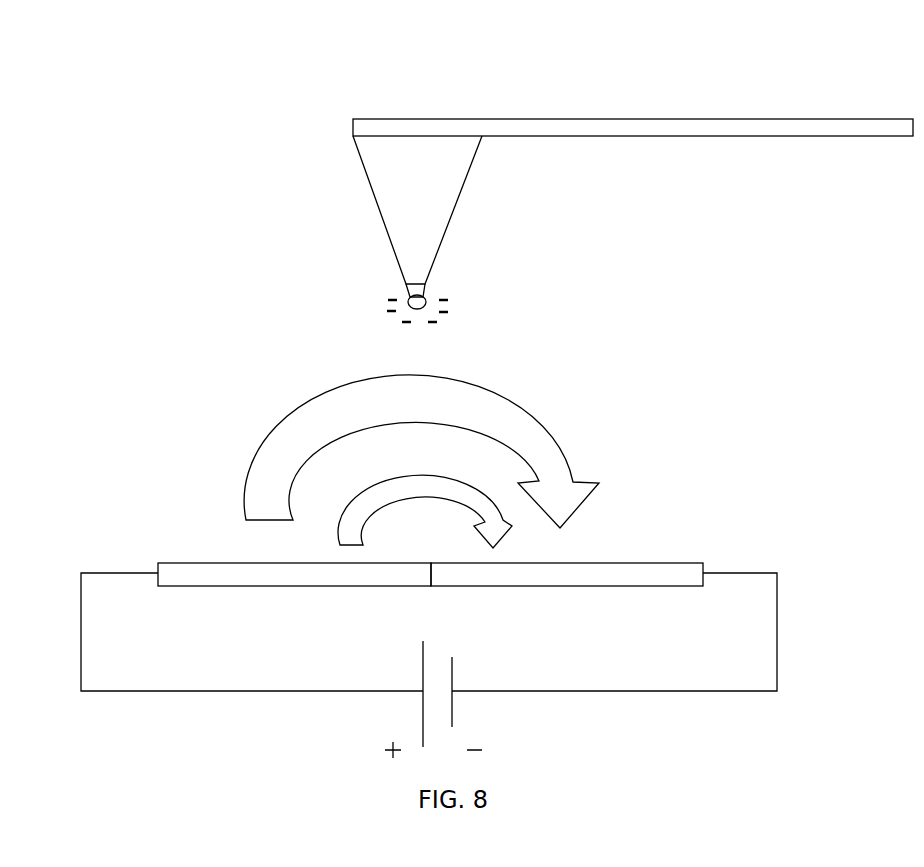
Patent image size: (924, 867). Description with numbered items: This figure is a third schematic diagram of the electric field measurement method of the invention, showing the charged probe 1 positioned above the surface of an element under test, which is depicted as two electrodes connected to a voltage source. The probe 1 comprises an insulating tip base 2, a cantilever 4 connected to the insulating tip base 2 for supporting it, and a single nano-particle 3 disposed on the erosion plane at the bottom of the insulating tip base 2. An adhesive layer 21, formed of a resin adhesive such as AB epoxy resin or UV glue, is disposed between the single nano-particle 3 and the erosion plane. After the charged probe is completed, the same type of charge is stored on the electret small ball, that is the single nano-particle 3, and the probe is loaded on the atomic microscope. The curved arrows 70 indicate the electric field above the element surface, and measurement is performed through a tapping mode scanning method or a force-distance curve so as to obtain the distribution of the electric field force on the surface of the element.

The probe 1 is at (575, 175).
The insulating tip base 2 is at (407, 202).
The single nano-particle 3 is at (400, 300).
The cantilever 4 is at (430, 117).
The adhesive layer 21 is at (425, 289).
The electric field direction arrows 70 is at (582, 442).